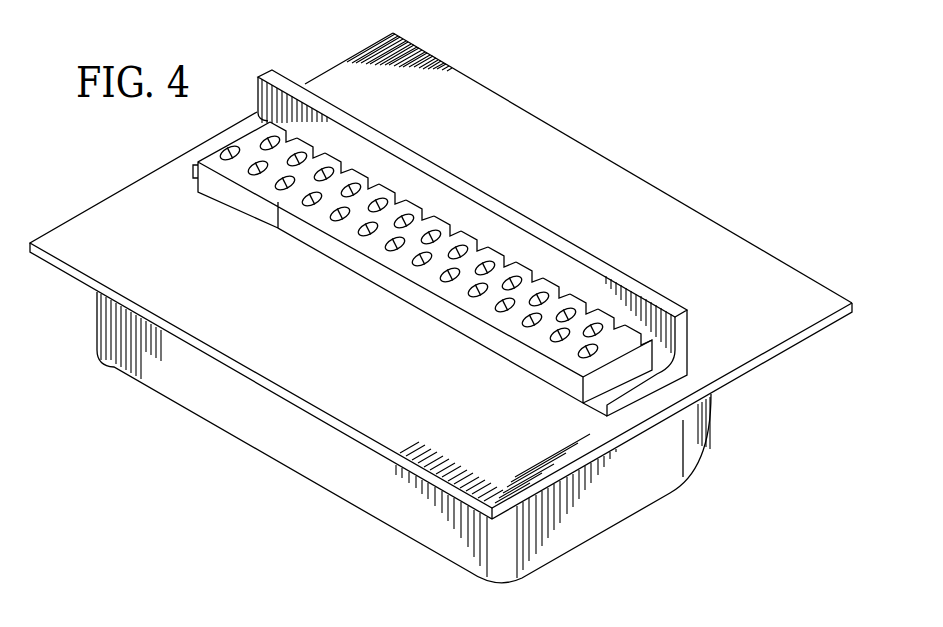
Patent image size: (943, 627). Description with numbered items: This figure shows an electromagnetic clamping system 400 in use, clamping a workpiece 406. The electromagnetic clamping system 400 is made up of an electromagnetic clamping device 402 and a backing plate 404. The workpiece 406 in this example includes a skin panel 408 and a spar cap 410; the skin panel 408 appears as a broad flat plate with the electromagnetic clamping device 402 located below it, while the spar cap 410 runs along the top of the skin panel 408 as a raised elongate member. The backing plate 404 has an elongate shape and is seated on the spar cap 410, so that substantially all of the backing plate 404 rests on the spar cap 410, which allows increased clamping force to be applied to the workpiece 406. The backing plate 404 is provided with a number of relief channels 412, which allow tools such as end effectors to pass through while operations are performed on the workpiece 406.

The electromagnetic clamping system 400 is at (703, 123).
The electromagnetic clamping device 402 is at (638, 498).
The backing plate 404 is at (507, 318).
The workpiece 406 is at (554, 140).
The skin panel 408 is at (477, 92).
The spar cap 410 is at (547, 232).
The number of relief channels 412 is at (366, 278).